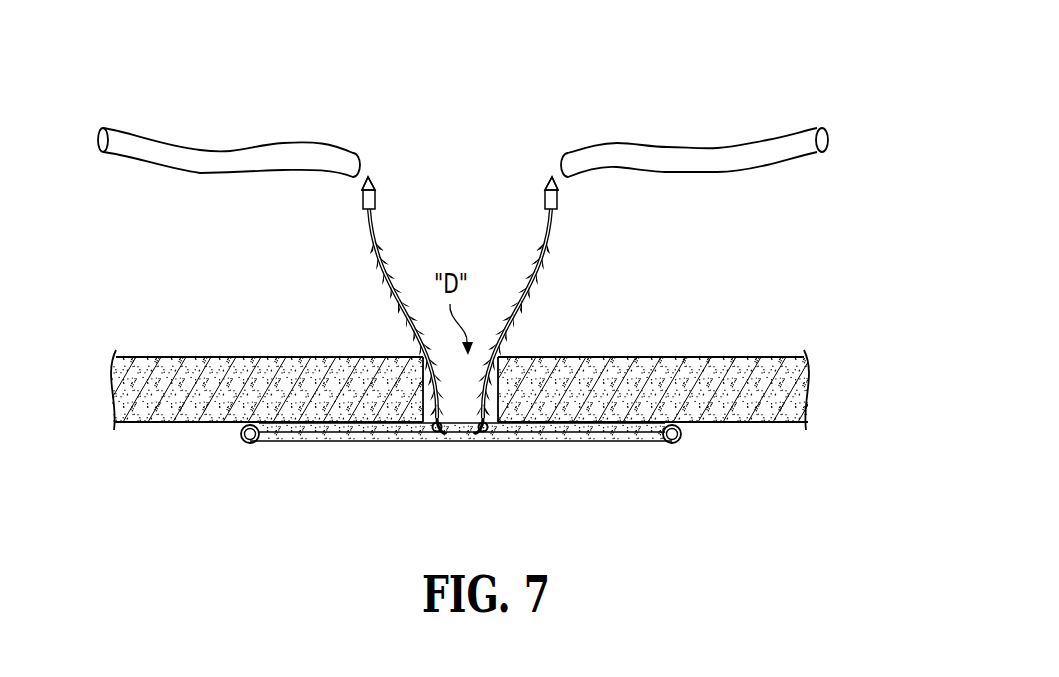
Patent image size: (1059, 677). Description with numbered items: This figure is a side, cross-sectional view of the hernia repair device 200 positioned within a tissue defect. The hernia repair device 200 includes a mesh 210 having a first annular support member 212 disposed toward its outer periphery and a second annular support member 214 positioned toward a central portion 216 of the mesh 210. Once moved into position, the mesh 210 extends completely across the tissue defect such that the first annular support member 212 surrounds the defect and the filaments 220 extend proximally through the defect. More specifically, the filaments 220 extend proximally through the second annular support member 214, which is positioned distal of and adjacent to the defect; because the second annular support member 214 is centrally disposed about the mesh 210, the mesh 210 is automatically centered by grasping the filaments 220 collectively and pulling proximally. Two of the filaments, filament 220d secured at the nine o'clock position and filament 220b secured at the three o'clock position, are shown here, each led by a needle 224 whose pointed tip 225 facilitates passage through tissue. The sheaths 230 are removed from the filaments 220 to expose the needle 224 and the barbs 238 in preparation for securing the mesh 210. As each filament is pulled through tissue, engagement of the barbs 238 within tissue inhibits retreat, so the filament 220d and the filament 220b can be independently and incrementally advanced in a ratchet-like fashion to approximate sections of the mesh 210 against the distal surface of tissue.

The hernia repair device 200 is at (256, 79).
The mesh 210 is at (310, 446).
The first annular support member 212 is at (673, 447).
The second annular support member 214 is at (481, 433).
The central portion 216 is at (466, 432).
The filaments 220 is at (540, 255).
The filament 220b is at (540, 280).
The filament 220d is at (383, 280).
The needle 224 is at (360, 199).
The pointed tip 225 is at (364, 177).
The sheath 230 is at (257, 149).
The barbs 238 is at (375, 290).